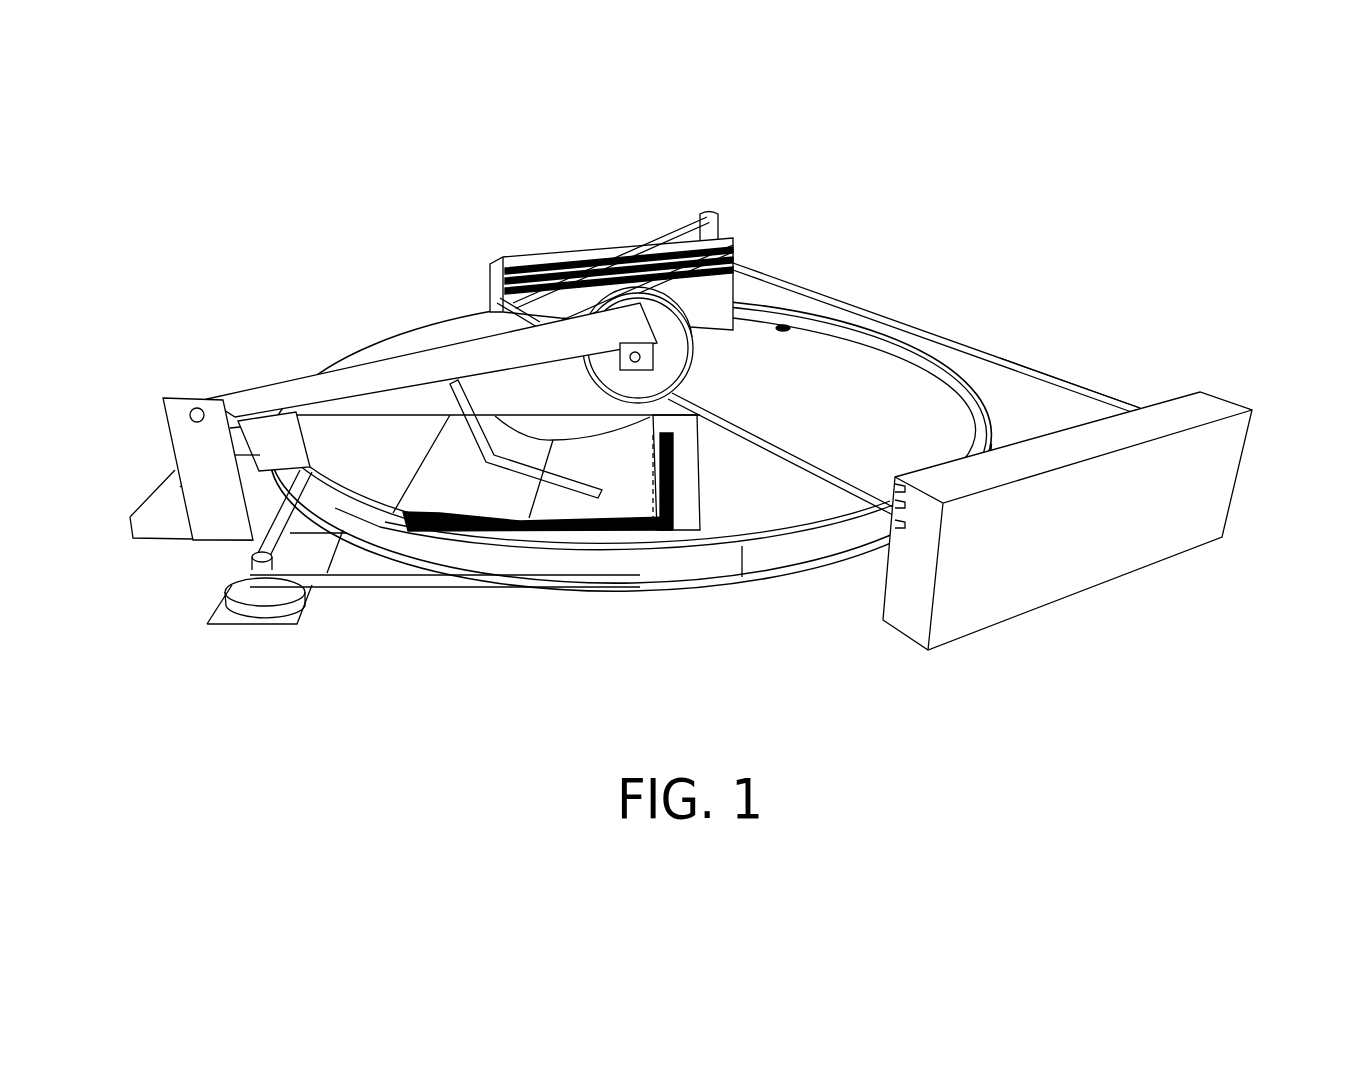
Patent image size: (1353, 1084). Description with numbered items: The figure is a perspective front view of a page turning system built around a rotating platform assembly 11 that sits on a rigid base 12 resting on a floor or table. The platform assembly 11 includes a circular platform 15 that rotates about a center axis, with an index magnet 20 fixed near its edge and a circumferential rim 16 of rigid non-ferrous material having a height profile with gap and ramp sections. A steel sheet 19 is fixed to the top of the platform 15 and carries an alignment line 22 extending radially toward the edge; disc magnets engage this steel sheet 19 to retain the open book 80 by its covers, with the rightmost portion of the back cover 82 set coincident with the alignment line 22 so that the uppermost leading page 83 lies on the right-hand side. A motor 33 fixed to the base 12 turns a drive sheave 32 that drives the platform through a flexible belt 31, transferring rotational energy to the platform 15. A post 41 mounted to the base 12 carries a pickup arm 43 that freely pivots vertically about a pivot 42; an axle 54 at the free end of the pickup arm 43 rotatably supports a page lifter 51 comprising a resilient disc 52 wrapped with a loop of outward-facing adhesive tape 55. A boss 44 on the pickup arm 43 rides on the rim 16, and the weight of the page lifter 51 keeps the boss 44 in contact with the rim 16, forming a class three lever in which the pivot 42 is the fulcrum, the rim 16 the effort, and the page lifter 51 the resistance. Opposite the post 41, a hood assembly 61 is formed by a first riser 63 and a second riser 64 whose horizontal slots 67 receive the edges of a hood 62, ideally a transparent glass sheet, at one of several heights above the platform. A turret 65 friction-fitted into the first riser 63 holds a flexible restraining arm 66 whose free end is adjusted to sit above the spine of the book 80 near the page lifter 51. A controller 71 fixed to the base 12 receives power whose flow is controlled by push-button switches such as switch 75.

The platform assembly 11 is at (630, 516).
The base 12 is at (297, 622).
The circular platform 15 is at (903, 372).
The circumferential rim 16 is at (808, 540).
The steel sheet 19 is at (693, 518).
The index magnet 20 is at (785, 327).
The alignment line 22 is at (655, 535).
The flexible belt 31 is at (398, 582).
The drive sheave 32 is at (252, 560).
The motor 33 is at (250, 613).
The post 41 is at (180, 433).
The pivot 42 is at (195, 410).
The pickup arm 43 is at (328, 377).
The boss 44 is at (273, 425).
The page lifter 51 is at (693, 299).
The disc 52 is at (677, 333).
The axle 54 is at (657, 350).
The adhesive tape 55 is at (650, 300).
The hood assembly 61 is at (1108, 488).
The hood 62 is at (1035, 378).
The first riser 63 is at (590, 237).
The second riser 64 is at (1228, 493).
The turret 65 is at (718, 228).
The restraining arm 66 is at (515, 470).
The horizontal slots 67 is at (500, 287).
The controller 71 is at (196, 479).
The push-button switch 75 is at (163, 493).
The book 80 is at (507, 556).
The back cover 82 is at (600, 532).
The leading page 83 is at (605, 420).